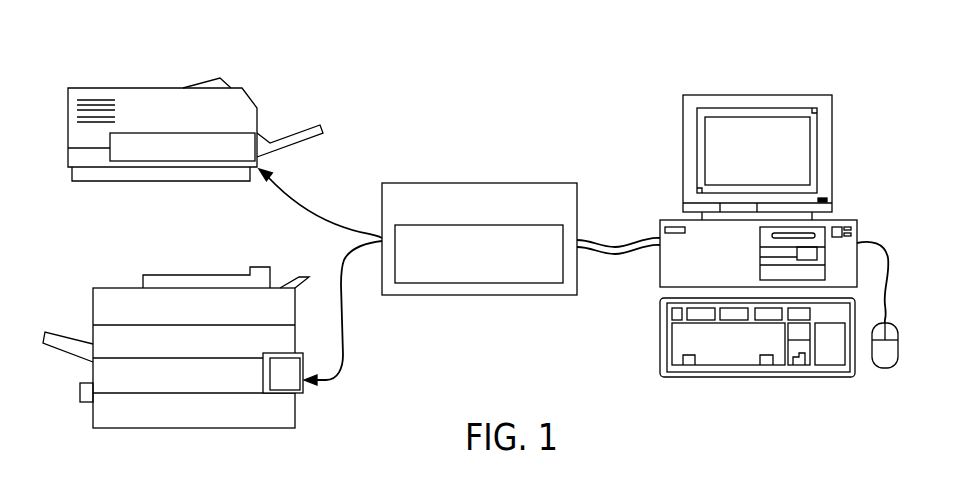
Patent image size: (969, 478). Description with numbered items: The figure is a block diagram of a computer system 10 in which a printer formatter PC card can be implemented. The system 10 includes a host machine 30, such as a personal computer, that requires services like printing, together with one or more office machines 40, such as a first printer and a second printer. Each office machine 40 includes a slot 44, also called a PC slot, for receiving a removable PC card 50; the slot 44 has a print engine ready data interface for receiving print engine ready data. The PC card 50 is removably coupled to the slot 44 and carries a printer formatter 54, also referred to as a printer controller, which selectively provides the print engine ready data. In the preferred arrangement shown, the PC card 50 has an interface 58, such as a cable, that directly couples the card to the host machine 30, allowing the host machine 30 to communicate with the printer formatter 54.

The computer system 10 is at (532, 106).
The host machine 30 is at (779, 254).
The office machine 40 is at (212, 270).
The slot 44 is at (234, 157).
The PC card 50 is at (538, 212).
The printer formatter 54 is at (547, 279).
The interface 58 is at (621, 238).